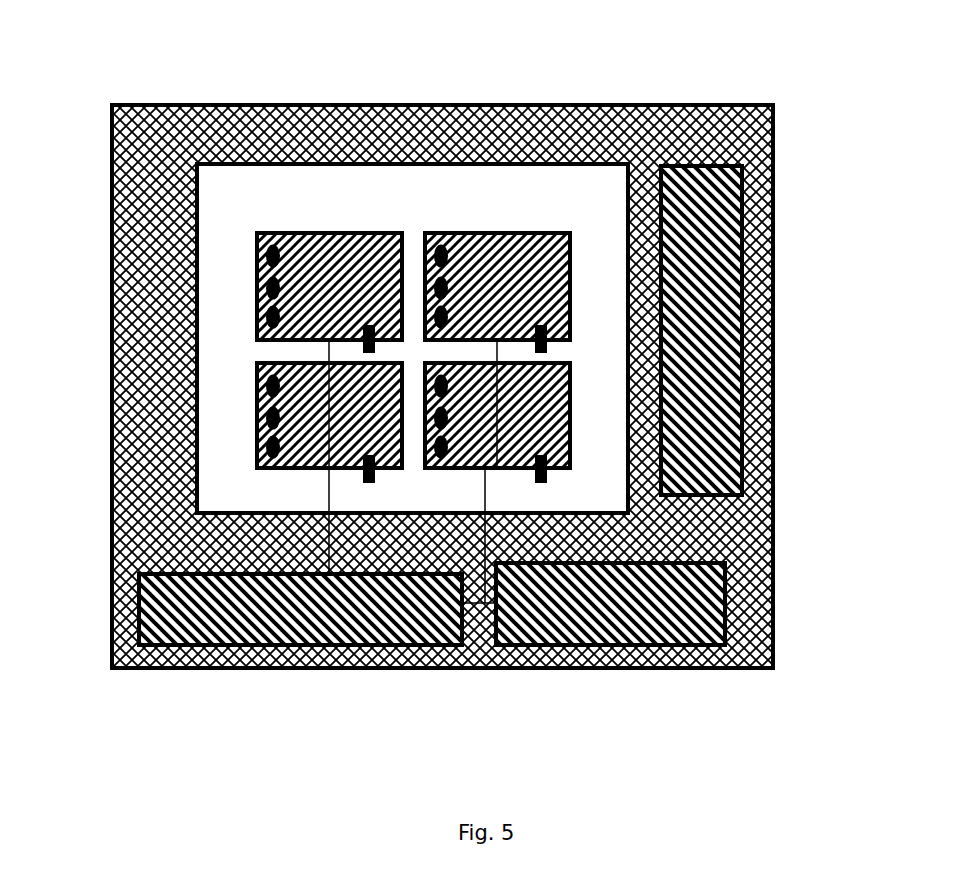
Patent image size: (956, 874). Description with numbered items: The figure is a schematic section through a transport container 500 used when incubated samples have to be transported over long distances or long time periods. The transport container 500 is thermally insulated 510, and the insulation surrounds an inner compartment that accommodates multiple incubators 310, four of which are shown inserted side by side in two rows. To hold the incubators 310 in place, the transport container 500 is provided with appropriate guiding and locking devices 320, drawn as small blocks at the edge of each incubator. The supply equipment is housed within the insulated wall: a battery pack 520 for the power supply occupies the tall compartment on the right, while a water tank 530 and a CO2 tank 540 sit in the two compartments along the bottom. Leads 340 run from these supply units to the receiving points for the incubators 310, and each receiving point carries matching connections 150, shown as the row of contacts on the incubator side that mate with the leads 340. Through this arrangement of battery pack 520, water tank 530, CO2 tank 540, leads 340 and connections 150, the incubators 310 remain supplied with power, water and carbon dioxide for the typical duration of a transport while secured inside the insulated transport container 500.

The transport container 500 is at (362, 103).
The thermal insulation 510 is at (137, 213).
The battery pack 520 is at (748, 305).
The water tank 530 is at (356, 645).
The CO2 tank 540 is at (537, 645).
The incubator 310 is at (487, 243).
The connections 150 is at (258, 321).
The leads 340 is at (325, 490).
The guiding and locking devices 320 is at (541, 483).